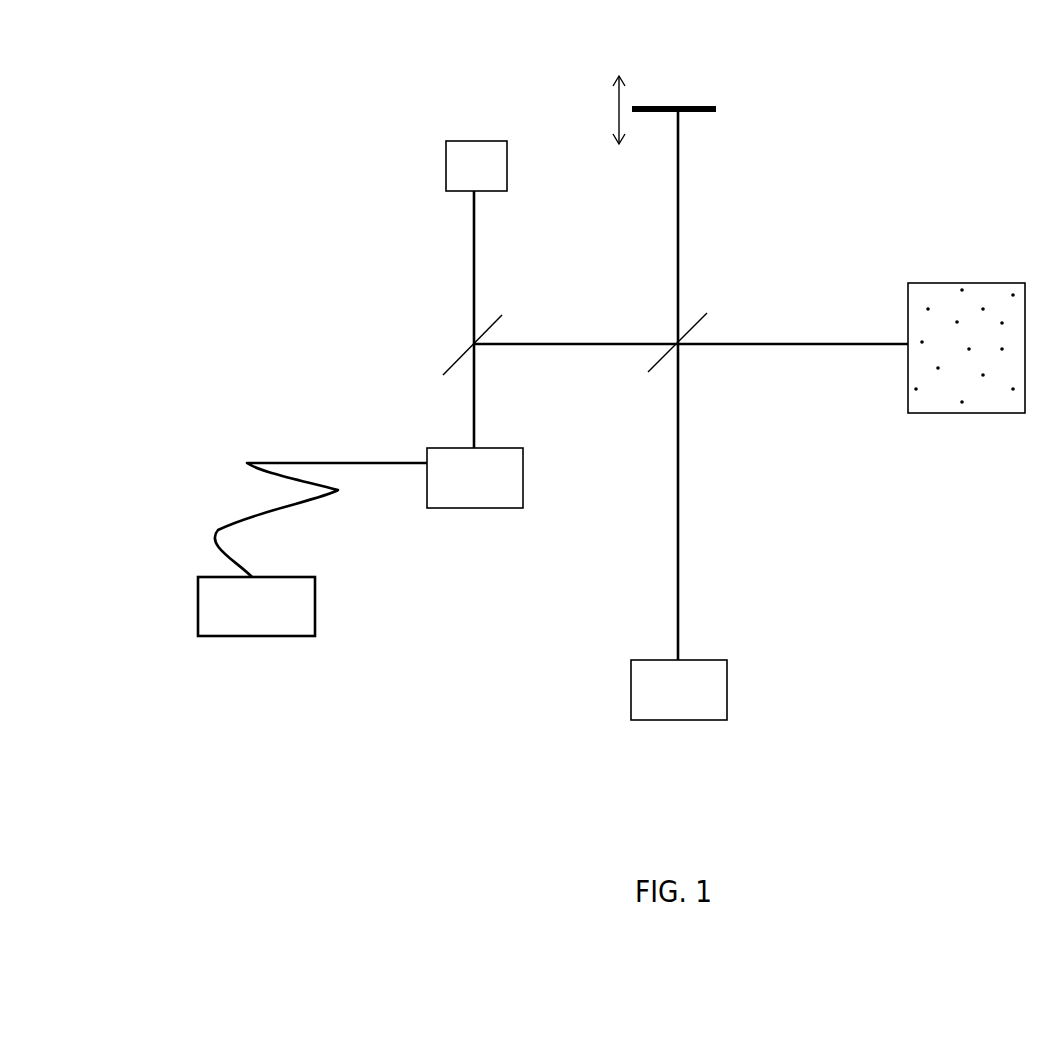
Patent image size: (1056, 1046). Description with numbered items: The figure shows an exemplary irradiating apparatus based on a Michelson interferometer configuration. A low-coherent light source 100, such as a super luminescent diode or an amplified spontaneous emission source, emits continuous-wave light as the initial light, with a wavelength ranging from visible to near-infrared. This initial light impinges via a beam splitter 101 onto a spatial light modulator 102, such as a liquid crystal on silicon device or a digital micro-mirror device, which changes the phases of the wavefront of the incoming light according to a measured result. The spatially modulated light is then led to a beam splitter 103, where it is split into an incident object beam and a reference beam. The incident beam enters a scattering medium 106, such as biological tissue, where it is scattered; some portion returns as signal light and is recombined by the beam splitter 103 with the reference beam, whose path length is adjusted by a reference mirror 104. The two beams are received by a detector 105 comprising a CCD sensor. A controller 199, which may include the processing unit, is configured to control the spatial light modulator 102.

The low-coherent light source 100 is at (462, 176).
The beam splitter 101 is at (448, 365).
The spatial light modulator 102 is at (450, 480).
The beam splitter 103 is at (659, 366).
The reference mirror 104 is at (690, 106).
The detector 105 is at (699, 691).
The scattering medium 106 is at (945, 390).
The controller 199 is at (268, 636).